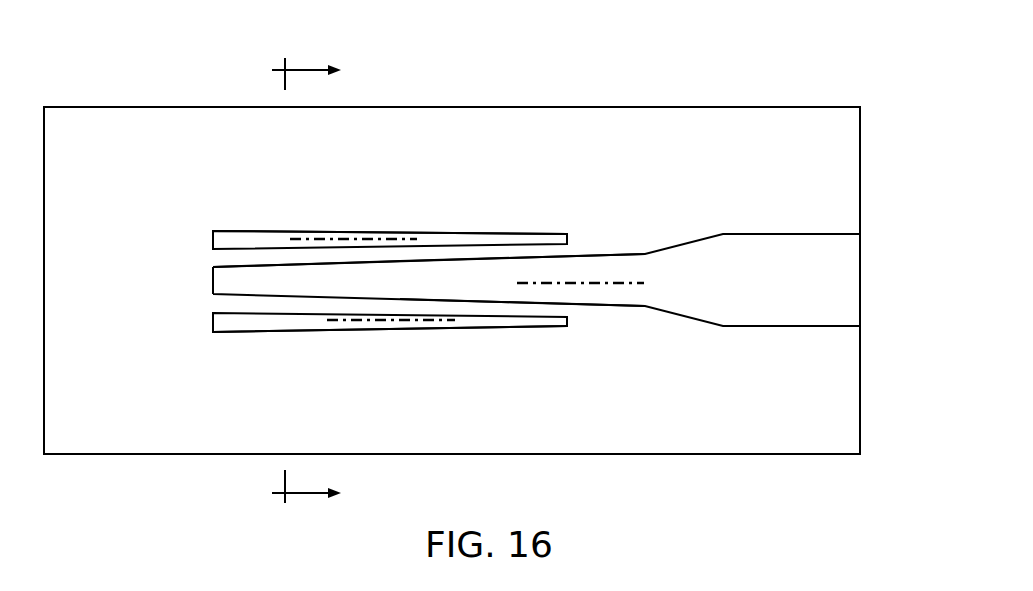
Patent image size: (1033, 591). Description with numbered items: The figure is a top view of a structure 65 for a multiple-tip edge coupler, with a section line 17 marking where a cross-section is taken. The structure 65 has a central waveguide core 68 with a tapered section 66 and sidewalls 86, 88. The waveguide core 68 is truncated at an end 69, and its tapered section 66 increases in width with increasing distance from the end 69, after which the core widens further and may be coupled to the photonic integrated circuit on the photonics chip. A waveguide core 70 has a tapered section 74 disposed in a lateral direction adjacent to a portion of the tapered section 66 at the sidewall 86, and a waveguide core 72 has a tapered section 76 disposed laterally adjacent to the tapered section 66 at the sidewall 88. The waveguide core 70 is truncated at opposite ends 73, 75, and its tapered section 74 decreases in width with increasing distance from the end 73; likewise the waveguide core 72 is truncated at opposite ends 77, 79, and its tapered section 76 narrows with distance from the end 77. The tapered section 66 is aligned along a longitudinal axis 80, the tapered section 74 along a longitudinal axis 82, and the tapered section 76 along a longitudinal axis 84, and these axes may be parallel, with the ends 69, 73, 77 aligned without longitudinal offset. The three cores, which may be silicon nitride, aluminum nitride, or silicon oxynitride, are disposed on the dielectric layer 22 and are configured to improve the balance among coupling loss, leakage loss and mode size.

The structure 65 is at (118, 80).
The section line 17- 17 is at (326, 285).
The dielectric layer 22 is at (820, 198).
The waveguide core 68 is at (479, 278).
The end 69 is at (212, 280).
The tapered section 66 is at (277, 273).
The waveguide core 70 is at (367, 202).
The waveguide core 72 is at (372, 364).
The end 73 is at (213, 238).
The tapered section 74 is at (265, 242).
The end 75 is at (570, 238).
The tapered section 76 is at (310, 320).
The end 77 is at (213, 323).
The end 79 is at (568, 323).
The longitudinal axis 80 is at (613, 283).
The longitudinal axis 82 is at (322, 240).
The longitudinal axis 84 is at (360, 320).
The sidewall 86 is at (552, 257).
The sidewall 88 is at (540, 305).